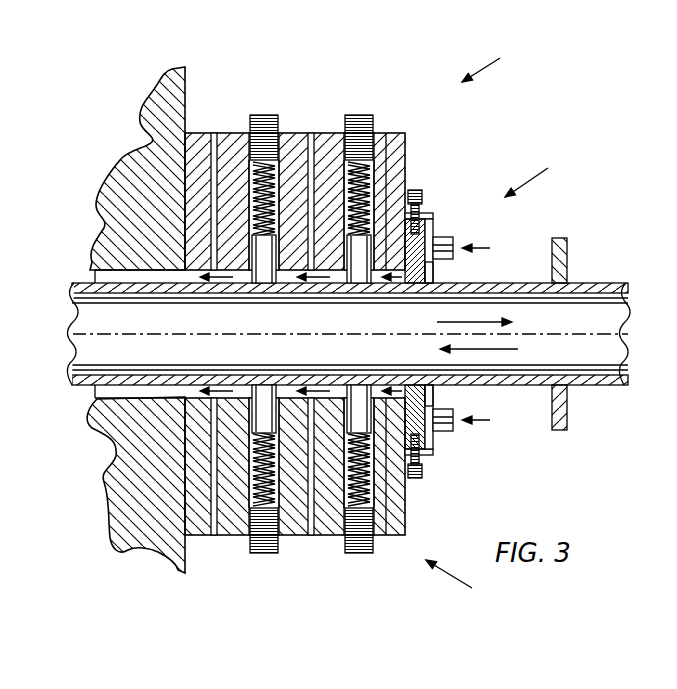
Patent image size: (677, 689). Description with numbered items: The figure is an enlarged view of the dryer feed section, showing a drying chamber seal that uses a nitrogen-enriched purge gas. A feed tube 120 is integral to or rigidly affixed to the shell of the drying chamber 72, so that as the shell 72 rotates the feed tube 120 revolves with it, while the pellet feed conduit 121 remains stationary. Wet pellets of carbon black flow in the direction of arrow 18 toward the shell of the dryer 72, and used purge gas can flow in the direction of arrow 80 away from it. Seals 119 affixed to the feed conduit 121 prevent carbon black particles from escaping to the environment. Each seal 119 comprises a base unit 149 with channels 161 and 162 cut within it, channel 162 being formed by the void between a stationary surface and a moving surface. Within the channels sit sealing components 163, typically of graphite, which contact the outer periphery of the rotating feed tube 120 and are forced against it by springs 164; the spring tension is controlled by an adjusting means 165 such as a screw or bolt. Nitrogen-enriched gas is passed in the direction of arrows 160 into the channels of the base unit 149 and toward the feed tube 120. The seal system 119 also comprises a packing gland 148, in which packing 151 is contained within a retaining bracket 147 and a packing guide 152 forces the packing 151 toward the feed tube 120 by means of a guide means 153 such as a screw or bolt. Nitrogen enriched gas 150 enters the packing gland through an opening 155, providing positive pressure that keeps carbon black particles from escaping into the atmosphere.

The arrow 18 is at (437, 322).
The shell of the drying chamber 72 is at (568, 245).
The arrow 80 is at (505, 349).
The seal 119 is at (477, 331).
The feed tube 120 is at (628, 372).
The pellet feed conduit 121 is at (158, 96).
The retaining bracket 147 is at (428, 214).
The packing gland 148 is at (545, 178).
The base unit 149 is at (407, 137).
The nitrogen enriched gas 150 is at (492, 248).
The packing 151 is at (434, 272).
The packing guide 152 is at (436, 226).
The guide means 153 is at (426, 192).
The opening 155 is at (455, 258).
The arrows 160 is at (215, 113).
The channel 161 is at (302, 132).
The channel 162 is at (185, 385).
The sealing component 163 is at (265, 385).
The spring 164 is at (407, 176).
The adjusting means 165 is at (374, 118).